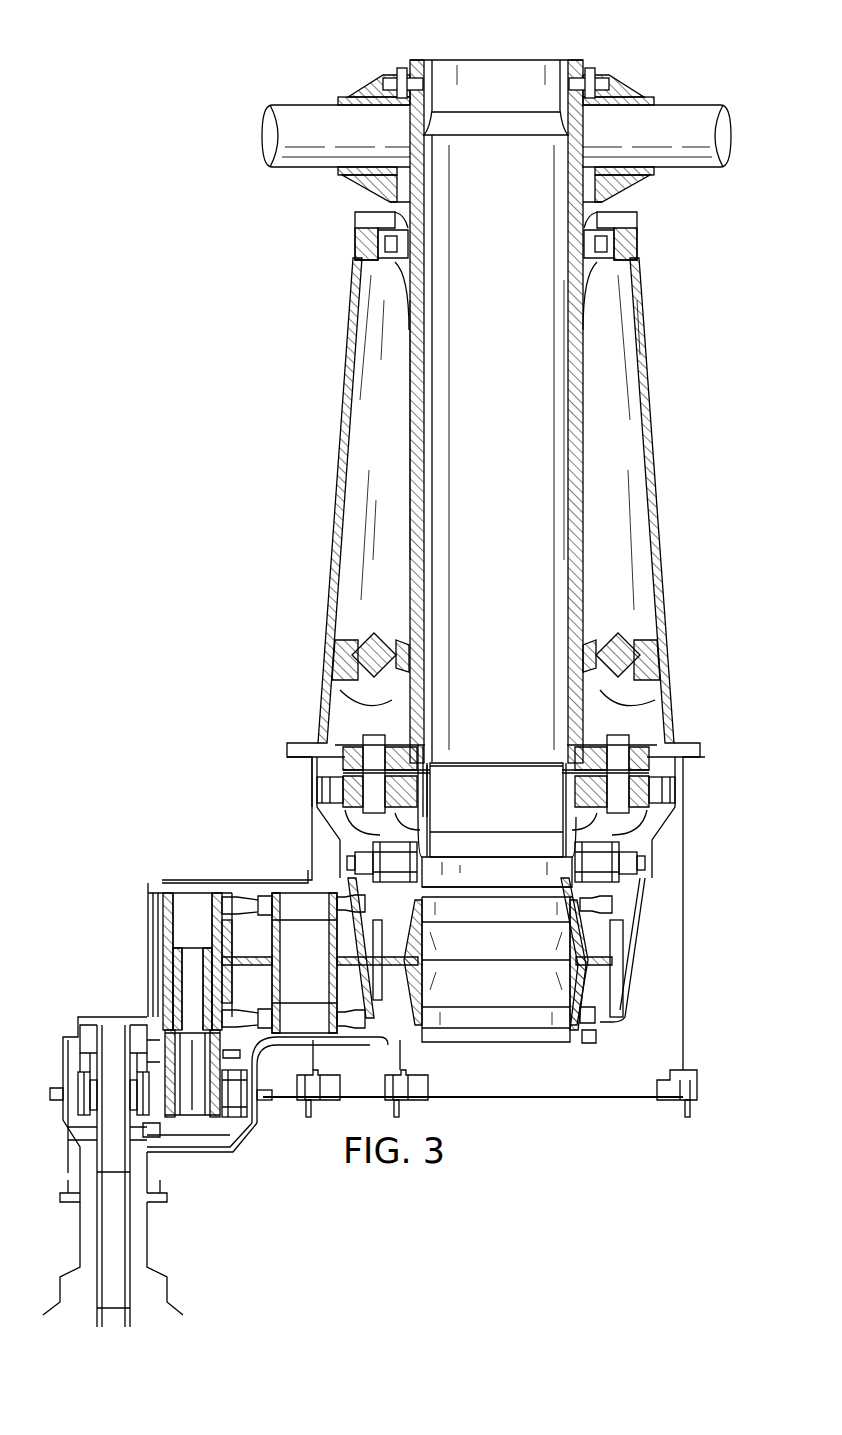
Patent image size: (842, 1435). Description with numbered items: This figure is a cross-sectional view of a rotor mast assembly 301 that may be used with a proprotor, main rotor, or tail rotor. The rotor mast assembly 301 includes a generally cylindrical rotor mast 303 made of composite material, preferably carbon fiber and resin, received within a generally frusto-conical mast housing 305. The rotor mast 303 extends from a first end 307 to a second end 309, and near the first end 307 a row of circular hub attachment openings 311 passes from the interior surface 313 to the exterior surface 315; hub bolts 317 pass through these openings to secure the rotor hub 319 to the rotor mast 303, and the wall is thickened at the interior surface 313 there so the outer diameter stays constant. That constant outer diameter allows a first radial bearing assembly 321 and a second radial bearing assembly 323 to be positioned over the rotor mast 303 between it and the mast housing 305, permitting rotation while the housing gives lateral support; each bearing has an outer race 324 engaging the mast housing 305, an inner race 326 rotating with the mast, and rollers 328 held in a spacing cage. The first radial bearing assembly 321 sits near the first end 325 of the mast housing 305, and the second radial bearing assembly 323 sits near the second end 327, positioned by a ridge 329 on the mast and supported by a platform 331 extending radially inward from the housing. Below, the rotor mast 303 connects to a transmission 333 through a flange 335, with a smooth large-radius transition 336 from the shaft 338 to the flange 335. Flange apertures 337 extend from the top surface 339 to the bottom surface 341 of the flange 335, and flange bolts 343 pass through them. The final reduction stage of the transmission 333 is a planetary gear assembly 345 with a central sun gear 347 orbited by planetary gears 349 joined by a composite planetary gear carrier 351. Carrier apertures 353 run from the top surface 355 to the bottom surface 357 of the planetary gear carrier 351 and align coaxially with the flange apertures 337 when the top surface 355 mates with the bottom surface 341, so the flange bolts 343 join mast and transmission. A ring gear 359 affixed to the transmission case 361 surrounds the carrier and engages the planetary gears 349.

The rotor mast assembly 301 is at (202, 80).
The rotor mast 303 is at (398, 486).
The mast housing 305 is at (326, 526).
The first end 307 is at (577, 62).
The second end 309 is at (640, 790).
The hub attachment openings 311 is at (592, 75).
The interior surface 313 is at (424, 252).
The exterior surface 315 is at (408, 462).
The hub bolts 317 is at (388, 82).
The rotor hub 319 is at (340, 100).
The first radial bearing assembly 321 is at (640, 222).
The second radial bearing assembly 323 is at (604, 620).
The outer race 324 is at (636, 640).
The first end 325 is at (360, 222).
The inner race 326 is at (590, 630).
The second end 327 is at (289, 749).
The rollers 328 is at (586, 676).
The ridge 329 is at (622, 700).
The platform 331 is at (365, 628).
The transmission 333 is at (113, 975).
The flange 335 is at (338, 758).
The transition 336 is at (612, 758).
The flange apertures 337 is at (345, 744).
The shaft 338 is at (570, 284).
The top surface 339 is at (352, 745).
The bottom surface 341 is at (345, 790).
The flange bolts 343 is at (345, 820).
The planetary gear assembly 345 is at (662, 772).
The sun gear 347 is at (494, 770).
The planetary gears 349 is at (660, 790).
The planetary gear carrier 351 is at (588, 768).
The carrier apertures 353 is at (590, 790).
The top surface 355 is at (426, 756).
The bottom surface 357 is at (392, 830).
The ring gear 359 is at (665, 815).
The transmission case 361 is at (640, 898).